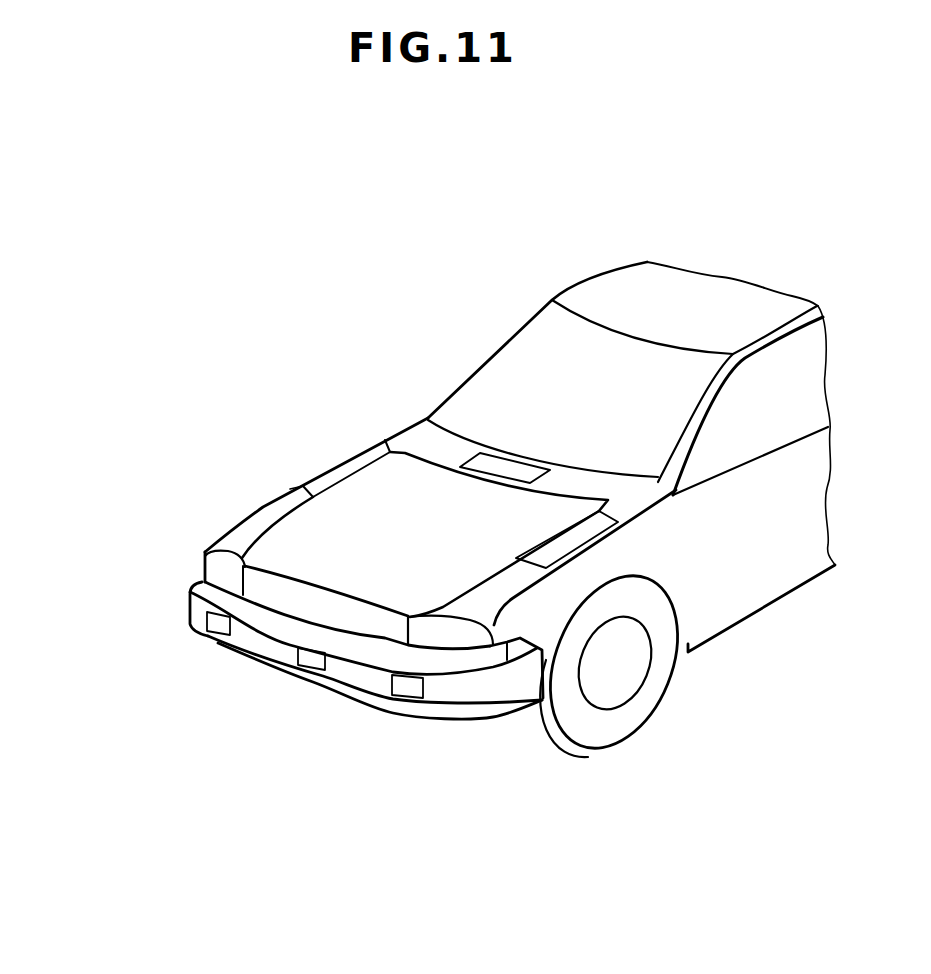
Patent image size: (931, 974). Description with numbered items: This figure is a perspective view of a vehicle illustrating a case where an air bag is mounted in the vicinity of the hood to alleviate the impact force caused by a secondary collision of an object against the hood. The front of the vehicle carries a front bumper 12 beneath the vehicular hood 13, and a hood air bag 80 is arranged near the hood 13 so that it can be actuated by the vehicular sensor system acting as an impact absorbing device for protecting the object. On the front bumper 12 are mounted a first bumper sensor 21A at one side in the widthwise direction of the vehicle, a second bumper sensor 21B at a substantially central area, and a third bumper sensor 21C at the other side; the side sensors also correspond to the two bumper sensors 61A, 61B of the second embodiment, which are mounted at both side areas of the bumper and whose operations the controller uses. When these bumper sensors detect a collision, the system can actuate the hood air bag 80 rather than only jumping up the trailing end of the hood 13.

The front bumper 12 is at (474, 692).
The vehicular hood 13 is at (332, 537).
The hood air bag 80 is at (334, 472).
The first bumper sensor 21A is at (149, 660).
The bumper sensor 61A is at (207, 636).
The second bumper sensor 21B is at (308, 669).
The third bumper sensor 21C is at (397, 751).
The bumper sensor 61B is at (404, 696).